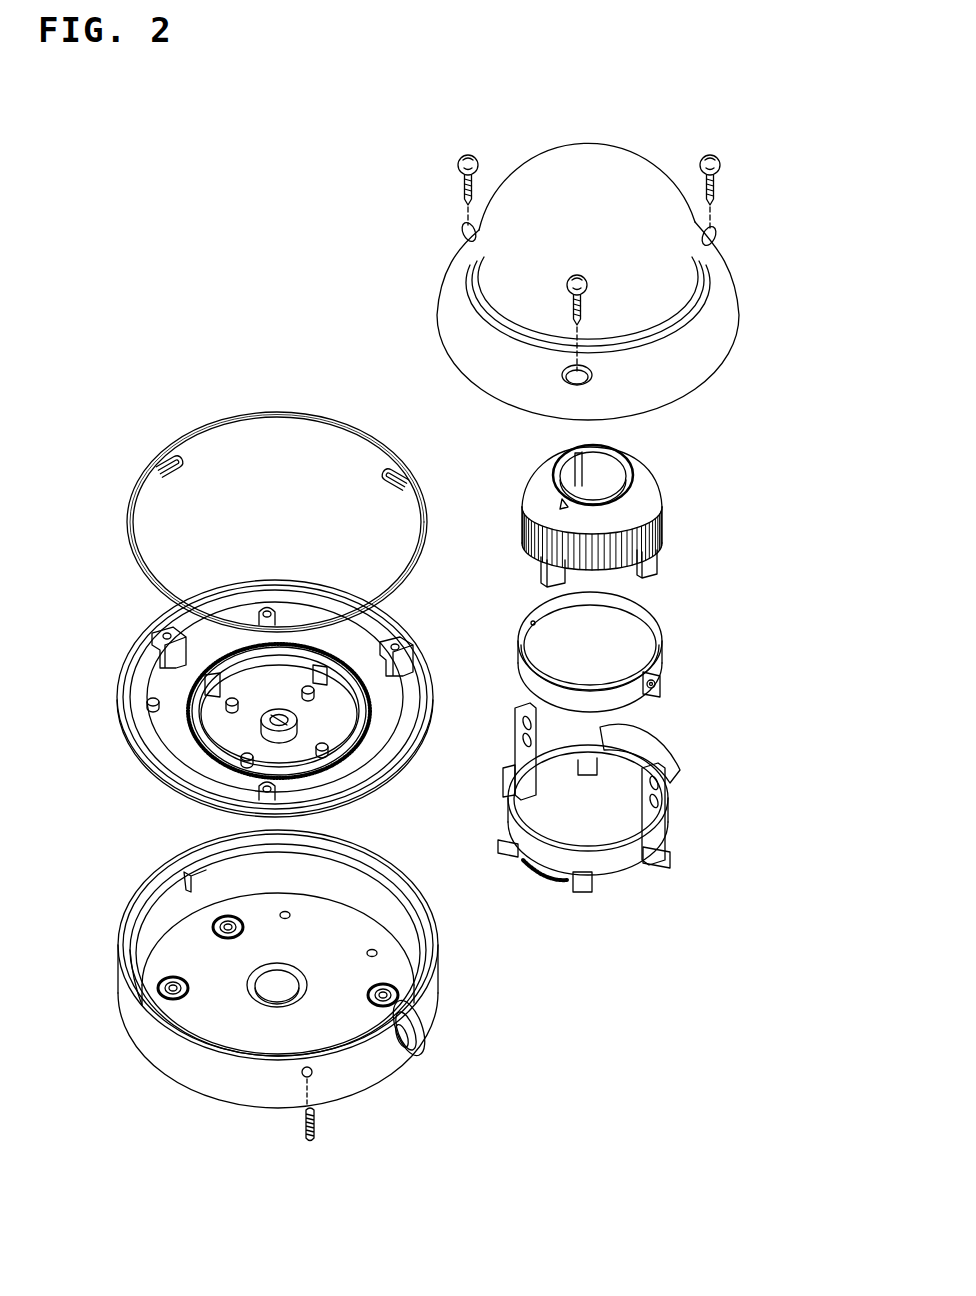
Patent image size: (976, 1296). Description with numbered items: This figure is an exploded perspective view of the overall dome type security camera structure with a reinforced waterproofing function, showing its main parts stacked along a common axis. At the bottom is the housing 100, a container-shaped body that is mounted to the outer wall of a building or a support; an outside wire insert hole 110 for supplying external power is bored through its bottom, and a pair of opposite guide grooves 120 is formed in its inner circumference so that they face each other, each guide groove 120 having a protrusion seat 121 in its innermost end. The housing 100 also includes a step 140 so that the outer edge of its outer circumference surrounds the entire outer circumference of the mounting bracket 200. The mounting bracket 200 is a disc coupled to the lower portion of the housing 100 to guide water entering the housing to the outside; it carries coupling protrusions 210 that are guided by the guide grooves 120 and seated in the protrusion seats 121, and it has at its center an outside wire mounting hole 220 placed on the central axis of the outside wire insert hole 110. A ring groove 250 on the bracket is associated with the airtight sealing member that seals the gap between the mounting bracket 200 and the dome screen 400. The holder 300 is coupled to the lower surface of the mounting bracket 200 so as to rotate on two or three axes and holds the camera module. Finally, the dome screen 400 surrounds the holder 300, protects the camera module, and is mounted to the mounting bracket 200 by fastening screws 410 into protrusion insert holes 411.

The housing 100 is at (432, 991).
The outside wire insert hole 110 is at (275, 988).
The guide groove 120 is at (140, 952).
The protrusion seat 121 is at (157, 903).
The step 140 is at (405, 885).
The mounting bracket 200 is at (365, 655).
The coupling protrusion 210 is at (388, 782).
The outside wire mounting hole 220 is at (287, 718).
The ring groove 250 is at (326, 352).
The holder 300 is at (680, 518).
The dome screen 400 is at (672, 160).
The screw 410 is at (574, 276).
The protrusion insert hole 411 is at (463, 235).